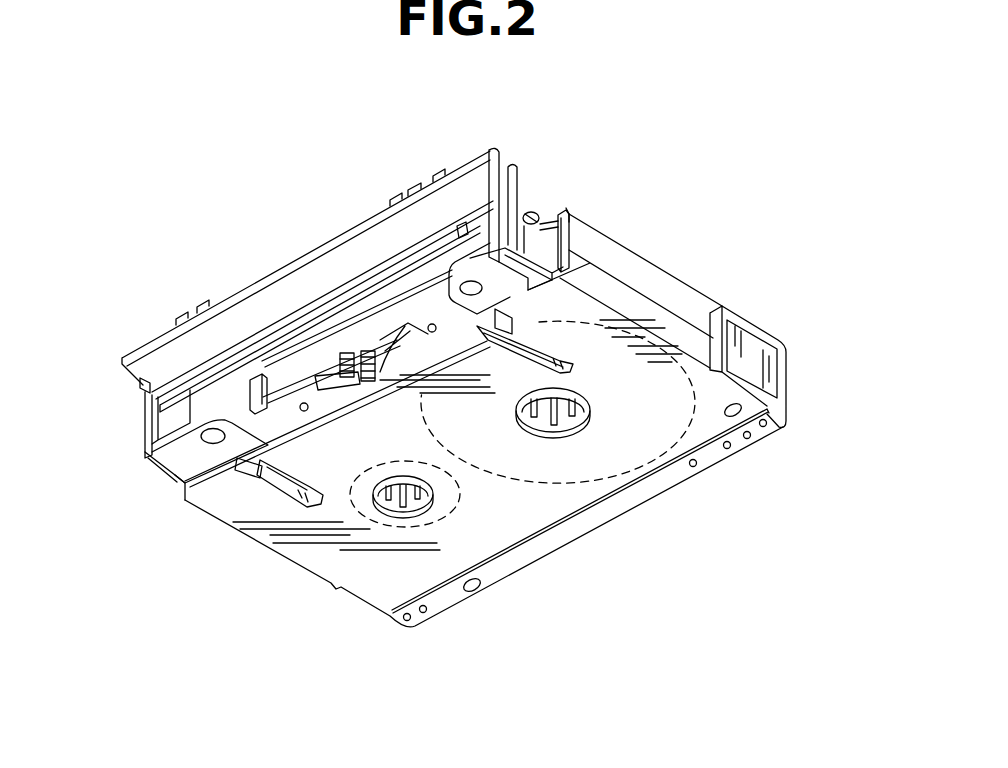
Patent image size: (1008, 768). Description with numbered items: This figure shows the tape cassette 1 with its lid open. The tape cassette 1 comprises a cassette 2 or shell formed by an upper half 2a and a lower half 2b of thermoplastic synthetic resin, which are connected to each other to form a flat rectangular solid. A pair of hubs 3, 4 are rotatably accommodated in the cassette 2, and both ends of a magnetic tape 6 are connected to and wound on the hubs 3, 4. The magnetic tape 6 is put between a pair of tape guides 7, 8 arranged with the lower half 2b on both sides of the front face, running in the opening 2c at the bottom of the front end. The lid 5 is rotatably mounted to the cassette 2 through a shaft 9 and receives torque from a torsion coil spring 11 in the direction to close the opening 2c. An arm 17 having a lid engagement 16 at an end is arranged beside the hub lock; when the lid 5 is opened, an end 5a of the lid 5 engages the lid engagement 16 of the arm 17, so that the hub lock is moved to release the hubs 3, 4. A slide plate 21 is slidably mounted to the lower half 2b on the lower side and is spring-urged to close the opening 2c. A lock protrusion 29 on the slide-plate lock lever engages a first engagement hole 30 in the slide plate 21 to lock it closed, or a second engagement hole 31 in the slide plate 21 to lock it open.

The tape cassette 1 is at (498, 363).
The cassette 2 is at (513, 303).
The upper half 2a is at (708, 308).
The lower half 2b is at (692, 345).
The opening 2c is at (313, 321).
The hub 3 is at (570, 418).
The hub 4 is at (418, 505).
The lid 5 is at (356, 212).
The end of the lid 5a is at (562, 228).
The magnetic tape 6 is at (348, 340).
The tape guide 7 is at (457, 225).
The tape guide 8 is at (210, 372).
The shaft 9 is at (521, 247).
The torsion coil spring 11 is at (530, 230).
The lid engagement 16 is at (492, 198).
The arm 17 is at (573, 250).
The slide plate 21 is at (358, 577).
The lock protrusion 29 is at (307, 503).
The first engagement hole 30 is at (293, 495).
The second engagement hole 31 is at (263, 482).